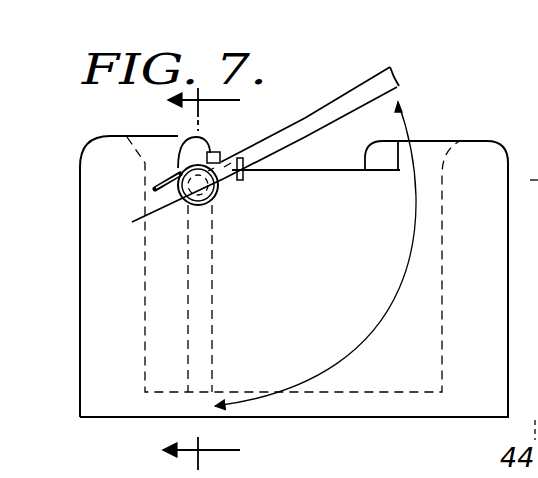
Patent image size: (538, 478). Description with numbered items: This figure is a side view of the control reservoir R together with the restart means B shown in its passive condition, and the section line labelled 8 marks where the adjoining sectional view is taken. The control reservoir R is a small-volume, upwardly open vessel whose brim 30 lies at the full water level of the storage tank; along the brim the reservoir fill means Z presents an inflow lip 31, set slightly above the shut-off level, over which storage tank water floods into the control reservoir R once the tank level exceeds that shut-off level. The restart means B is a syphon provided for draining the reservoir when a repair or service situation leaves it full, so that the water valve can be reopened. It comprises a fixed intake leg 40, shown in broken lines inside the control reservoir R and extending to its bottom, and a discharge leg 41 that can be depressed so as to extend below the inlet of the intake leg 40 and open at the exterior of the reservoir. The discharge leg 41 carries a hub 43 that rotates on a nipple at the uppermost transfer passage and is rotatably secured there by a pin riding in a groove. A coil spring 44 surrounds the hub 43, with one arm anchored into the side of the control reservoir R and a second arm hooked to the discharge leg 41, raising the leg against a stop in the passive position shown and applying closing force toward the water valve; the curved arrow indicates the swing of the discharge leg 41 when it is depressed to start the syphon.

The brim 30 is at (497, 100).
The inflow lip 31 is at (318, 166).
The fixed intake leg 40 is at (212, 295).
The discharge leg 41 is at (340, 98).
The hub 43 is at (138, 213).
The coil spring 44 is at (216, 198).
The section line 8- 8 is at (215, 277).
The restart means B is at (407, 28).
The control reservoir R is at (117, 126).
The reservoir fill means Z is at (327, 150).